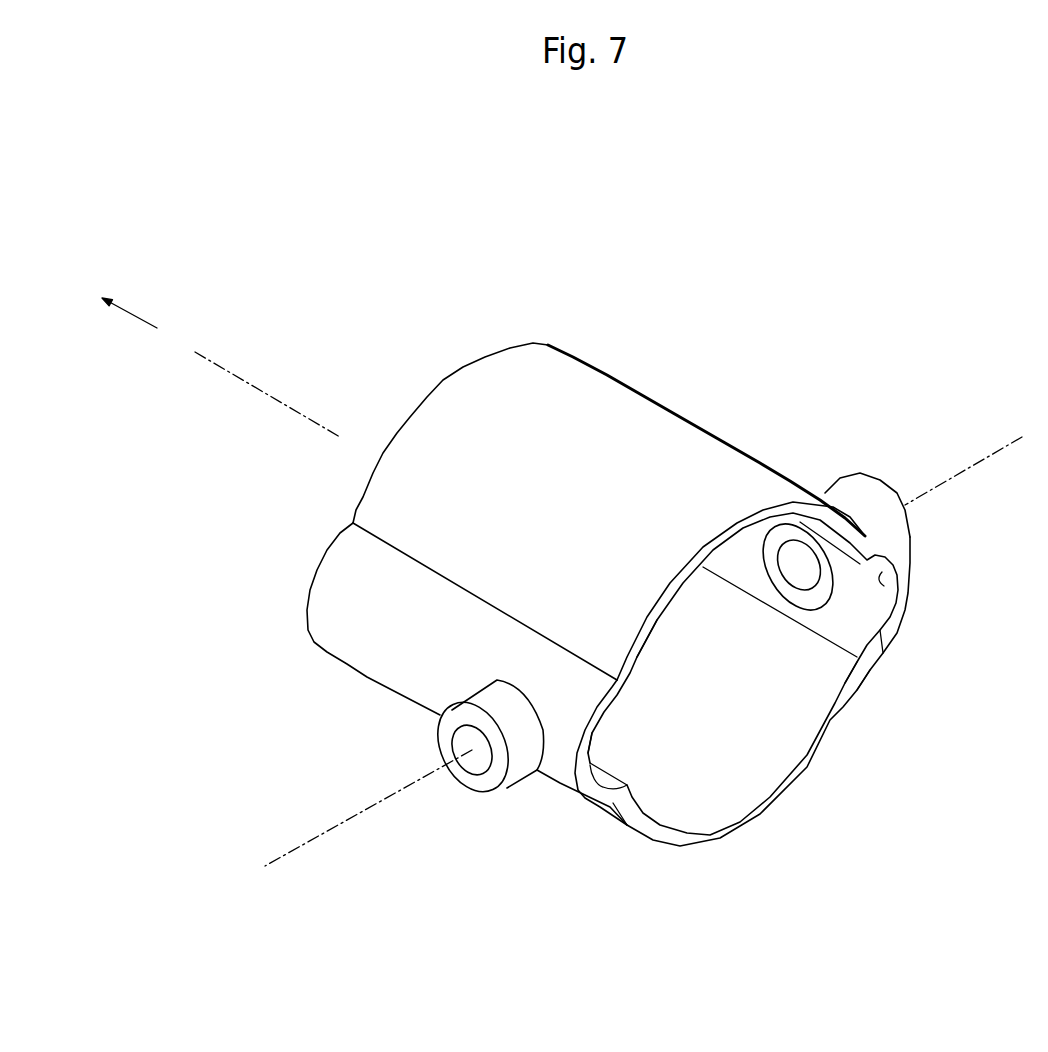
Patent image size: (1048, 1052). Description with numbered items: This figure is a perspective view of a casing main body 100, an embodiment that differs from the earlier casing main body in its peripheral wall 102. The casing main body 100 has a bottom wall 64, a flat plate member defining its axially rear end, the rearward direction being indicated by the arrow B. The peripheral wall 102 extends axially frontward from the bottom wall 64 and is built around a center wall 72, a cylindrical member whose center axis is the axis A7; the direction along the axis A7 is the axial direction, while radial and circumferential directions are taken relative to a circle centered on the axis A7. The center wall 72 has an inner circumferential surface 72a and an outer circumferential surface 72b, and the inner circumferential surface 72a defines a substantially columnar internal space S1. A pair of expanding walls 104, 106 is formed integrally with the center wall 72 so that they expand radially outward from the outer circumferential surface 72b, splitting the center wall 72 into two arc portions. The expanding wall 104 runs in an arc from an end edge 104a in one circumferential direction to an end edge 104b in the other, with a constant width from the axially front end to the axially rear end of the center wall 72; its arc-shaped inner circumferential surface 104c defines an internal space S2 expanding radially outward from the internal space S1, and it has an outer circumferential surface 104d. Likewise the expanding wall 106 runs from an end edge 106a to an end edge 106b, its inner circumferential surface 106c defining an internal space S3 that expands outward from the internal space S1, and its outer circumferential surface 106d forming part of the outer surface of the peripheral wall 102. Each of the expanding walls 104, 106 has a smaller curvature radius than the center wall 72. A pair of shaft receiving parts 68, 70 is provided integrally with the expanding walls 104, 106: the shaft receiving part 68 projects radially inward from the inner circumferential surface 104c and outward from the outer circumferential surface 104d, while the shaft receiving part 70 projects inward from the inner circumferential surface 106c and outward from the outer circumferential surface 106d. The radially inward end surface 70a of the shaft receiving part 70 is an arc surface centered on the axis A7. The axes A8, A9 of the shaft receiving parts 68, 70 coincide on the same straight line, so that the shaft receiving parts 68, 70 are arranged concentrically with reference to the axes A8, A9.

The casing main body 100 is at (846, 184).
The peripheral wall 102 is at (688, 407).
The bottom wall 64 is at (433, 390).
The shaft receiving part 68 is at (520, 760).
The shaft receiving part 70 is at (847, 575).
The end surface 70a is at (800, 597).
The center wall 72 is at (561, 412).
The inner circumferential surface 72a is at (722, 782).
The outer circumferential surface 72b is at (621, 514).
The expanding wall 104 is at (412, 650).
The end edge 104a is at (493, 606).
The end edge 104b is at (613, 803).
The inner circumferential surface 104c is at (600, 720).
The outer circumferential surface 104d is at (411, 627).
The expanding wall 106 is at (909, 605).
The end edge 106a is at (866, 538).
The end edge 106b is at (868, 668).
The inner circumferential surface 106c is at (899, 587).
The outer circumferential surface 106d is at (893, 645).
The internal space S1 is at (701, 661).
The internal space S2 is at (631, 764).
The internal space S3 is at (861, 636).
The axis A7 is at (245, 380).
The axis A8 is at (300, 862).
The axis A9 is at (1000, 450).
The arrow B is at (120, 302).